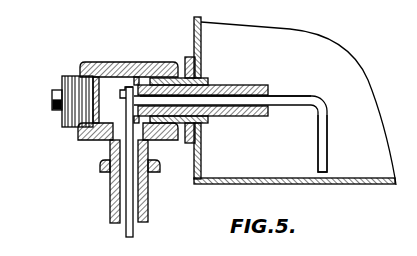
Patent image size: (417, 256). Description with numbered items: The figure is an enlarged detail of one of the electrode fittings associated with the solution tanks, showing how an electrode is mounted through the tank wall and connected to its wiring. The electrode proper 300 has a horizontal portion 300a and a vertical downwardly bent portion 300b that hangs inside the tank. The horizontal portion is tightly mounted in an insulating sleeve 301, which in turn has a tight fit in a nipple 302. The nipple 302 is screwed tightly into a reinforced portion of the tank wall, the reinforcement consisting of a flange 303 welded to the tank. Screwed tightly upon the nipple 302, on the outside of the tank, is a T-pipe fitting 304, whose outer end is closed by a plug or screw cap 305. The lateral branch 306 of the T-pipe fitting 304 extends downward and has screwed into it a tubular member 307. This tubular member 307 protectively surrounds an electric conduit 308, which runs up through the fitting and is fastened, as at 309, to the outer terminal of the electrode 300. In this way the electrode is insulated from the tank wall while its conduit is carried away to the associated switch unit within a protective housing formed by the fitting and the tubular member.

The electrode proper 300 is at (297, 95).
The horizontal portion 300a is at (285, 107).
The vertical downwardly bent portion 300b is at (327, 143).
The insulating sleeve 301 is at (240, 87).
The nipple 302 is at (205, 83).
The flange 303 is at (188, 58).
The T-pipe fitting 304 is at (120, 66).
The plug or screw cap 305 is at (62, 78).
The lateral branch 306 is at (105, 143).
The tubular member 307 is at (148, 200).
The electric conduit 308 is at (125, 236).
The fastening 309 is at (120, 97).